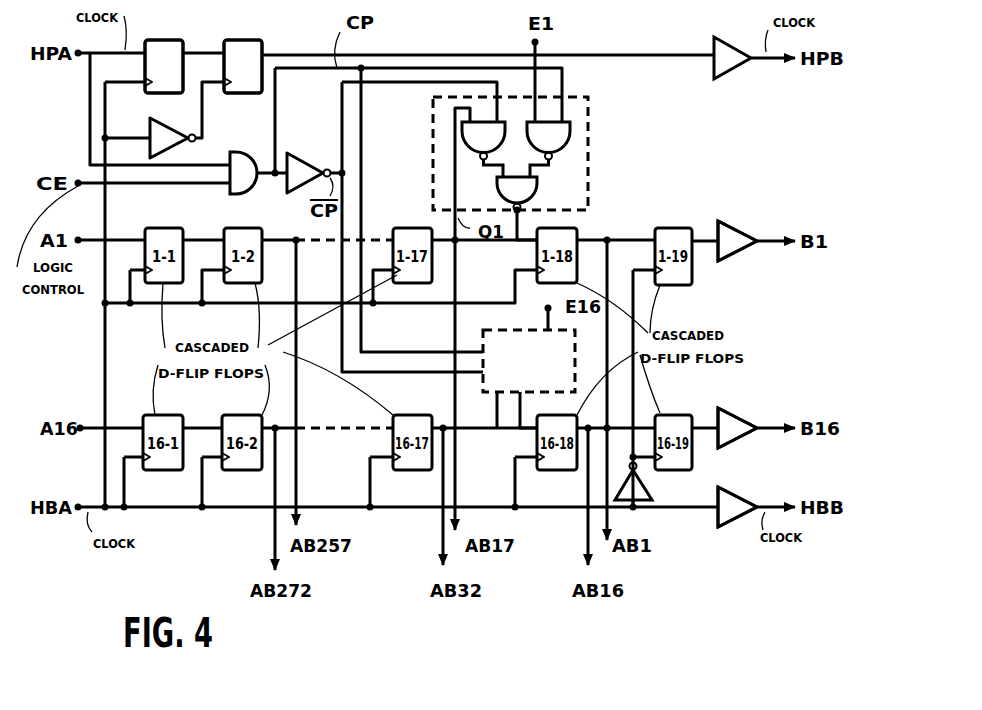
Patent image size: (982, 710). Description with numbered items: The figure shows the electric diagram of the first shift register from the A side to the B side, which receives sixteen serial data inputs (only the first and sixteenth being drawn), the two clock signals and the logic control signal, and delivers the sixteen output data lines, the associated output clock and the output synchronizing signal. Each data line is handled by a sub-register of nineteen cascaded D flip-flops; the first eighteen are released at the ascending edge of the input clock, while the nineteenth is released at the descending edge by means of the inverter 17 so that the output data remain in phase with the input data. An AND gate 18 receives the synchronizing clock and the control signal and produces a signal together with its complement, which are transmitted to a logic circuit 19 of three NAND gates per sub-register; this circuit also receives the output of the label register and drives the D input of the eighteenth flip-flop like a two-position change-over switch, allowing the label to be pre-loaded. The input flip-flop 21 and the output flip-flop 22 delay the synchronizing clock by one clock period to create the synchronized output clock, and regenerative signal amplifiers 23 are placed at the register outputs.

The inverter 17 is at (645, 487).
The AND gate 18 is at (238, 197).
The logic circuit 19 is at (583, 190).
The input flip-flop 21 is at (156, 48).
The output flip-flop 22 is at (235, 48).
The regenerative signal amplifier 23 is at (723, 48).